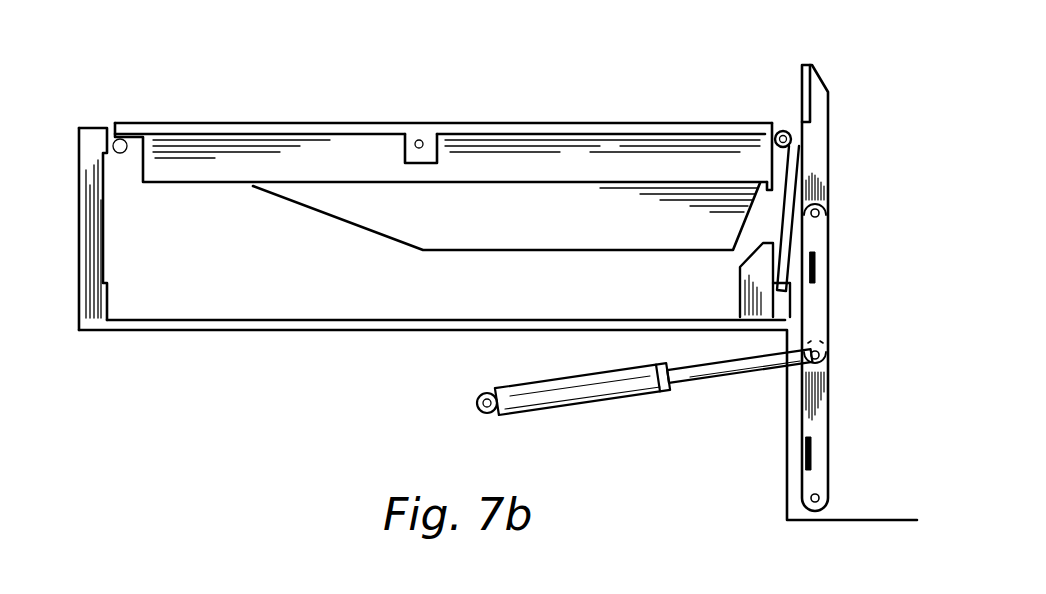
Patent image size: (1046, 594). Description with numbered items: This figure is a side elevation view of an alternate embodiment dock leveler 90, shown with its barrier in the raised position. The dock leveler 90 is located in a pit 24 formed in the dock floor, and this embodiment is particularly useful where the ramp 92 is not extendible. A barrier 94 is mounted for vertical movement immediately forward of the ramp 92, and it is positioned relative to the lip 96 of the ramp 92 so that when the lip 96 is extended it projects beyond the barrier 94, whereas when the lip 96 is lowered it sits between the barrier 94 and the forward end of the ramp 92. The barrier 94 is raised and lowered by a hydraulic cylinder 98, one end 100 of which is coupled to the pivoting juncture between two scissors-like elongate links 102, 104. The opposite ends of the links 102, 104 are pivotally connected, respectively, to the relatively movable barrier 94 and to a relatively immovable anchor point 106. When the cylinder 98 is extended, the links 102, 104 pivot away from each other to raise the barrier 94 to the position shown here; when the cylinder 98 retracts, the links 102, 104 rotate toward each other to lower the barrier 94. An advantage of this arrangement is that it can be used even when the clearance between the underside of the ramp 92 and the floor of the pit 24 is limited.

The pit 24 is at (261, 319).
The dock leveler 90 is at (395, 88).
The ramp 92 is at (550, 122).
The barrier 94 is at (868, 288).
The lip 96 is at (793, 160).
The hydraulic cylinder 98 is at (627, 380).
The end 100 is at (819, 355).
The elongate link 102 is at (820, 418).
The elongate link 104 is at (815, 273).
The anchor point 106 is at (819, 496).